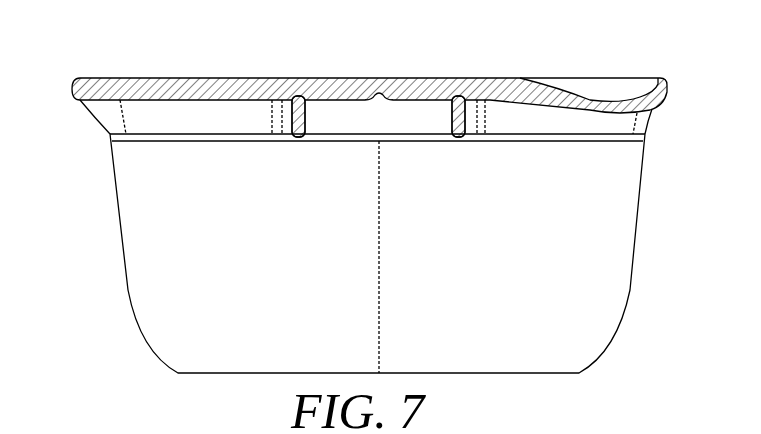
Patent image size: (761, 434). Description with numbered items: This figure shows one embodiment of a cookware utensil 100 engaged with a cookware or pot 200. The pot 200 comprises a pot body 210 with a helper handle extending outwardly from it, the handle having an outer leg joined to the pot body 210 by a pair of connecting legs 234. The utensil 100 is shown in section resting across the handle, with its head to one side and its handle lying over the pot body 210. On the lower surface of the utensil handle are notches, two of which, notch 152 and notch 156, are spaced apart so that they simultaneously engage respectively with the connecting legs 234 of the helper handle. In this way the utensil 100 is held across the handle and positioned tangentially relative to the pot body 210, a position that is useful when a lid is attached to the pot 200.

The cookware utensil 100 is at (120, 78).
The notch 152 is at (297, 80).
The notch 156 is at (455, 80).
The cookware or pot 200 is at (386, 236).
The pot body 210 is at (638, 247).
The connecting leg 234 is at (280, 118).